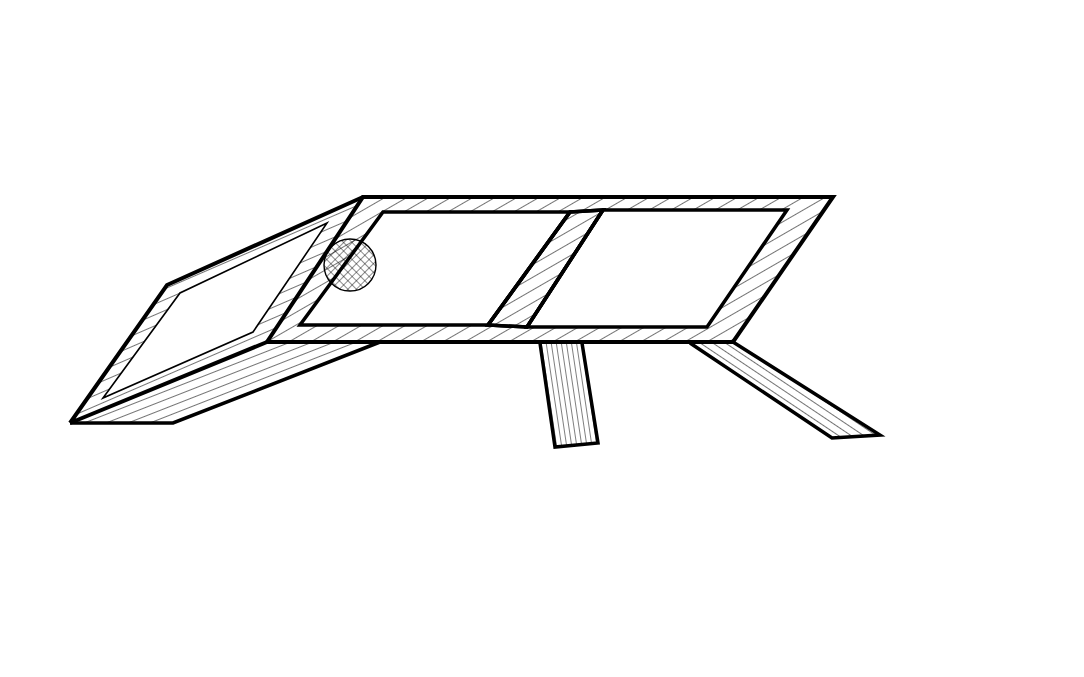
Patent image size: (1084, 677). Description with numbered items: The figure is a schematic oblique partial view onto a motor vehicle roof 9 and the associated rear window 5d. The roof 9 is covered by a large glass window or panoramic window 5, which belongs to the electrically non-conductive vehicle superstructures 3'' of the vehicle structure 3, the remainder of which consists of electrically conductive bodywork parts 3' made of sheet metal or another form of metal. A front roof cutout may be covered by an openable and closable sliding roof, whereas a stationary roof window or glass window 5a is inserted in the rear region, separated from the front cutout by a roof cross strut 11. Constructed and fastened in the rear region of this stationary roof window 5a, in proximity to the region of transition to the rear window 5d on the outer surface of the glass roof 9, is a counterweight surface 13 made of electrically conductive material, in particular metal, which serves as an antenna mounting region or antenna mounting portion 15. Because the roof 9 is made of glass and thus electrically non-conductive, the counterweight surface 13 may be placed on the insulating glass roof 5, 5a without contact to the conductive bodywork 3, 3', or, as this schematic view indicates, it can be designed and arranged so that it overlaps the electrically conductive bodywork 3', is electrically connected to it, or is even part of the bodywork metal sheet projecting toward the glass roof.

The vehicle structure 3 is at (551, 313).
The electrically conductive bodywork parts 3' is at (505, 369).
The electrically non-conductive vehicle superstructures 3'' is at (551, 212).
The glass window 5 is at (475, 248).
The panoramic roof 5a is at (437, 228).
The rear window 5d is at (237, 293).
The motor vehicle roof 9 is at (503, 135).
The roof cross strut 11 is at (558, 257).
The counterweight surface 13 is at (352, 250).
The antenna mounting portion 15 is at (289, 175).